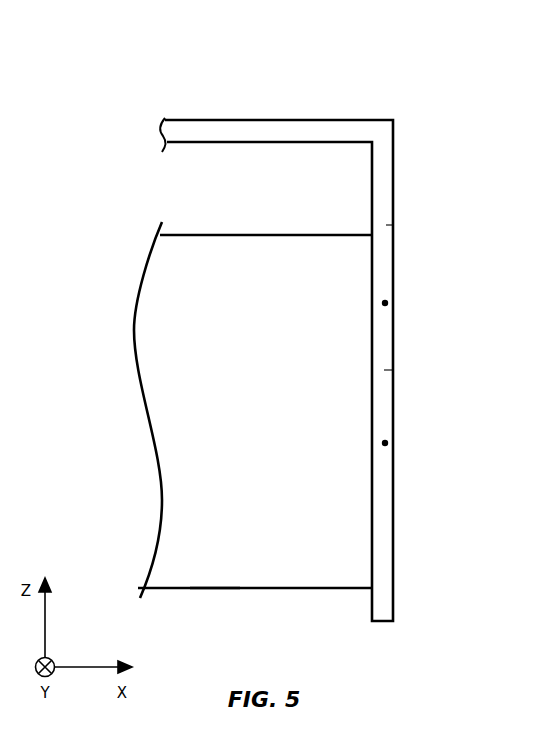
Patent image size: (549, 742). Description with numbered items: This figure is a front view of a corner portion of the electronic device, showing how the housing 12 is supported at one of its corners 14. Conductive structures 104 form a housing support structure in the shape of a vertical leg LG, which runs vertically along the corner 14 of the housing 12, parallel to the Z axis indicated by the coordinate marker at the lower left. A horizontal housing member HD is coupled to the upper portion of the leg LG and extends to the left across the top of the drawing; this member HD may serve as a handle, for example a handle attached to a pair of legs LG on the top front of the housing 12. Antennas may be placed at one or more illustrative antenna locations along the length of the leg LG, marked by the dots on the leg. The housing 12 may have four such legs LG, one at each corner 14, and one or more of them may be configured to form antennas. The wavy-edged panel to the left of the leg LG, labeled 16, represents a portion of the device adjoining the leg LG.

The housing 12 is at (447, 169).
The corner 14 is at (372, 395).
The display cover layer 16 is at (214, 580).
The conductive structures 104 is at (388, 228).
The leg LG is at (386, 370).
The horizontal housing member HD is at (263, 90).